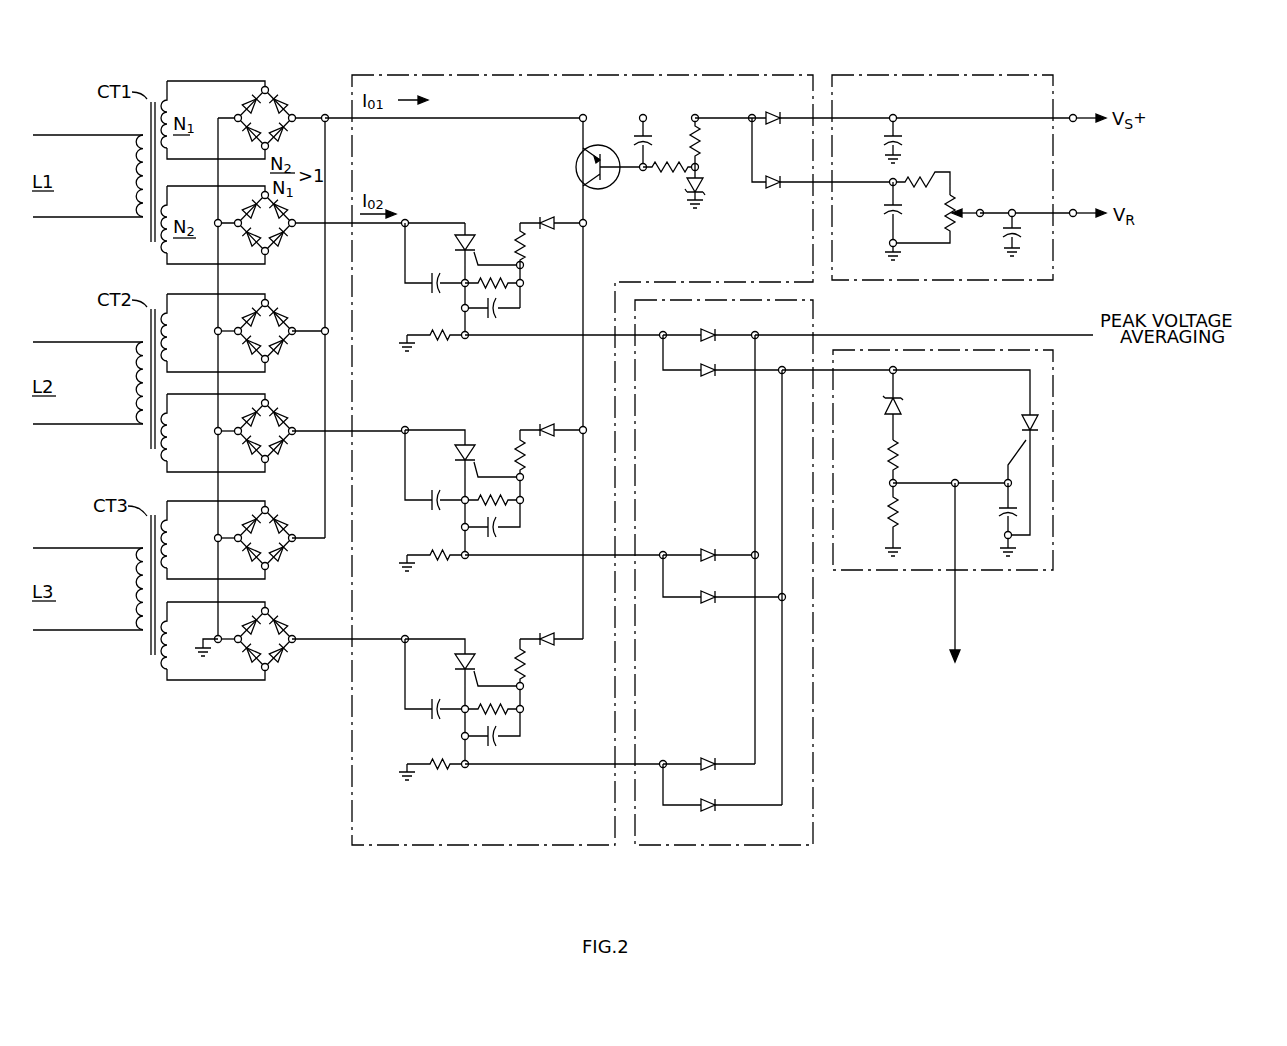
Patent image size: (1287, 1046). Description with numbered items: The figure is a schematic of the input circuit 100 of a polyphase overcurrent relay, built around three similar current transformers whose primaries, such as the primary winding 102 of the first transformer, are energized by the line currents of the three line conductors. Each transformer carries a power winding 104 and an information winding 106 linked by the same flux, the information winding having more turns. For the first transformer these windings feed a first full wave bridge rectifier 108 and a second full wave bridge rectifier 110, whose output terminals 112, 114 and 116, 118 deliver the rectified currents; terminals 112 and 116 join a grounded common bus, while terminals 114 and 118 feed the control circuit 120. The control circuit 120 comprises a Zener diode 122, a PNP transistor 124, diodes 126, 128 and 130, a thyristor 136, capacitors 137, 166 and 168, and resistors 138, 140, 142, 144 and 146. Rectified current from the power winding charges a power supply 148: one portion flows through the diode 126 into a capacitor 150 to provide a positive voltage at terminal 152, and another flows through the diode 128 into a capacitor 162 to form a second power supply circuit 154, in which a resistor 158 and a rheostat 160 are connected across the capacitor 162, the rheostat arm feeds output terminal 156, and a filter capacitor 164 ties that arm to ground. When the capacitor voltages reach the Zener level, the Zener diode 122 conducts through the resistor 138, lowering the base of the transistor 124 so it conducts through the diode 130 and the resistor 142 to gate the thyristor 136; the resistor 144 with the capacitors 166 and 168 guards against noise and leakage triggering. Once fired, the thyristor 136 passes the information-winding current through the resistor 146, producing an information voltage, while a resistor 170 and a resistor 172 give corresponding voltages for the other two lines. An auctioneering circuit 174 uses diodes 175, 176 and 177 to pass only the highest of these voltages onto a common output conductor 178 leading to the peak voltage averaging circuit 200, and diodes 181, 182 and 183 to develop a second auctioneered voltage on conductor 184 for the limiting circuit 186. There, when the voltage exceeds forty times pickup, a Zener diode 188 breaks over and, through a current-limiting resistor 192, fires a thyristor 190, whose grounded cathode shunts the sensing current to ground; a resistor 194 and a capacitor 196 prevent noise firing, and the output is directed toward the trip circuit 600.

The input circuit 100 is at (559, 476).
The primary winding 102 is at (132, 160).
The power winding 104 is at (170, 106).
The information winding 106 is at (169, 207).
The full wave bridge rectifier RE108 108 is at (273, 110).
The full wave bridge rectifier RE110 110 is at (311, 236).
The output terminal 112 is at (241, 119).
The output terminal 114 is at (293, 120).
The output terminal 116 is at (258, 212).
The output terminal 118 is at (281, 243).
The control circuit 120 is at (355, 794).
The Zener diode Z122 122 is at (686, 196).
The transistor T124 124 is at (578, 163).
The diode D126 126 is at (765, 109).
The diode D128 128 is at (775, 194).
The diode D130 130 is at (551, 216).
The thyristor SCR136 136 is at (480, 232).
The capacitor C137 137 is at (634, 141).
The resistor R138 138 is at (715, 150).
The resistor R140 140 is at (674, 174).
The resistor R142 142 is at (527, 243).
The resistor R144 144 is at (522, 280).
The resistor R146 146 is at (438, 332).
The power supply 148 is at (1056, 98).
The capacitor C150 150 is at (905, 139).
The terminal 152 is at (1075, 124).
The second power supply circuit 154 is at (940, 214).
The output terminal 156 is at (1078, 210).
The resistor R158 158 is at (930, 178).
The rheostat R160 160 is at (958, 206).
The capacitor C162 162 is at (880, 213).
The filter capacitor C164 164 is at (1000, 250).
The capacitor C166 166 is at (505, 318).
The capacitor C168 168 is at (430, 298).
The resistor R170 170 is at (440, 546).
The resistor R172 172 is at (440, 755).
The auctioneering circuit 174 is at (818, 638).
The diode D175 175 is at (708, 326).
The diode D176 176 is at (712, 545).
The diode D177 177 is at (712, 756).
The common output conductor 178 is at (976, 337).
The diode D181 181 is at (708, 378).
The diode D182 182 is at (711, 608).
The diode D183 183 is at (712, 812).
The common output conductor 184 is at (822, 366).
The limiting circuit 186 is at (883, 572).
The Zener diode Z188 188 is at (905, 406).
The thyristor SCR190 190 is at (1020, 430).
The resistor R192 192 is at (888, 452).
The resistor R194 194 is at (888, 511).
The capacitor C196 196 is at (998, 514).
The peak voltage averaging circuit 200 is at (1247, 365).
The trip circuit 600 is at (943, 592).